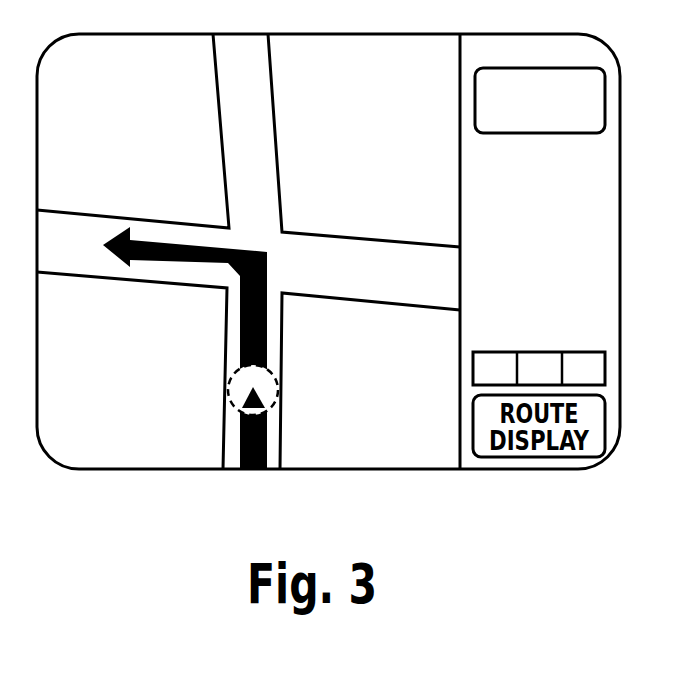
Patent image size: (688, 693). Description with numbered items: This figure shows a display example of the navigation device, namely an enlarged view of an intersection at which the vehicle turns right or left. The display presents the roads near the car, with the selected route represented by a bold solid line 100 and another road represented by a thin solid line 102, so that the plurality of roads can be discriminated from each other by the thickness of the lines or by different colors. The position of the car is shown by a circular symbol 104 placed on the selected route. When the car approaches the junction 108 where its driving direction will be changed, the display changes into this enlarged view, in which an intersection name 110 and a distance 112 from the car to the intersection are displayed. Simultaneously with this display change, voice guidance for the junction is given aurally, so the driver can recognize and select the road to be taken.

The bold solid line 100 is at (270, 440).
The thin solid line 102 is at (369, 270).
The circular symbol 104 is at (220, 383).
The junction 108 is at (245, 232).
The intersection name 110 is at (532, 133).
The distance 112 is at (477, 350).